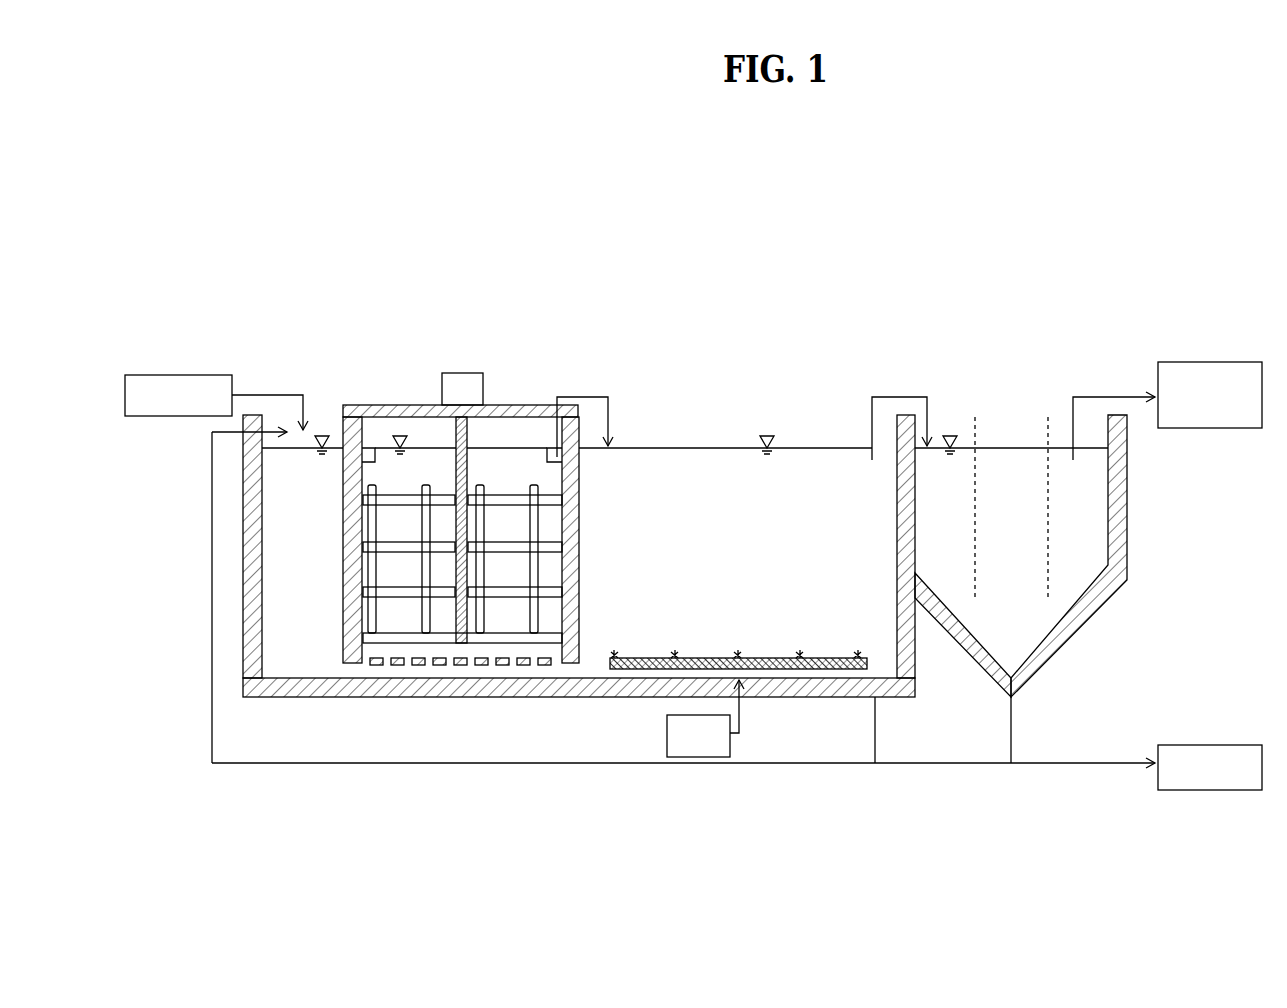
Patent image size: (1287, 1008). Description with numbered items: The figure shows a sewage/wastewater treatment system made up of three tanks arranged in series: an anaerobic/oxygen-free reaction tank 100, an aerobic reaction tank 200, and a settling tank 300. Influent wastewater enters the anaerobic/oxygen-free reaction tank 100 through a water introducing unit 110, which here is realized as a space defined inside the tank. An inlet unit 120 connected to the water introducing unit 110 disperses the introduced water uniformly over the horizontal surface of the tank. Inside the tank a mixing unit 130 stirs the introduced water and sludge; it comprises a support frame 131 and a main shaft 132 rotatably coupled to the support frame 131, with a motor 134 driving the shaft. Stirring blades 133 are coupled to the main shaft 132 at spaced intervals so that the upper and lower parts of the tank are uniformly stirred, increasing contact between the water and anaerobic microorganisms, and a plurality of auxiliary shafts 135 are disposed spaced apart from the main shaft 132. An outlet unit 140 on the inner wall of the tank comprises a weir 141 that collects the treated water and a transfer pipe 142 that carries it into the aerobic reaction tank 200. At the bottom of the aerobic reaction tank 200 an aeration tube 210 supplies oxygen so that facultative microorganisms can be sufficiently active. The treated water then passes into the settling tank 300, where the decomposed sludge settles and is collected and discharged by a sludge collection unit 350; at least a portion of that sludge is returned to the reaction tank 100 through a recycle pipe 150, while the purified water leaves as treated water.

The anaerobic/oxygen-free reaction tank 100 is at (450, 292).
The water introducing unit 110 is at (302, 560).
The inlet unit 120 is at (410, 698).
The mixing unit 130 is at (521, 553).
The support frame 131 is at (363, 405).
The main shaft 132 is at (477, 490).
The stirring blades 133 is at (585, 542).
The motor 134 is at (448, 380).
The auxiliary shafts 135 is at (480, 487).
The outlet unit 140 is at (600, 462).
The weir 141 is at (637, 470).
The transfer pipe 142 is at (597, 398).
The recycle pipe 150 is at (863, 768).
The aerobic reaction tank 200 is at (777, 292).
The aeration tube 210 is at (703, 660).
The settling tank 300 is at (1047, 292).
The sludge collection unit 350 is at (1012, 648).